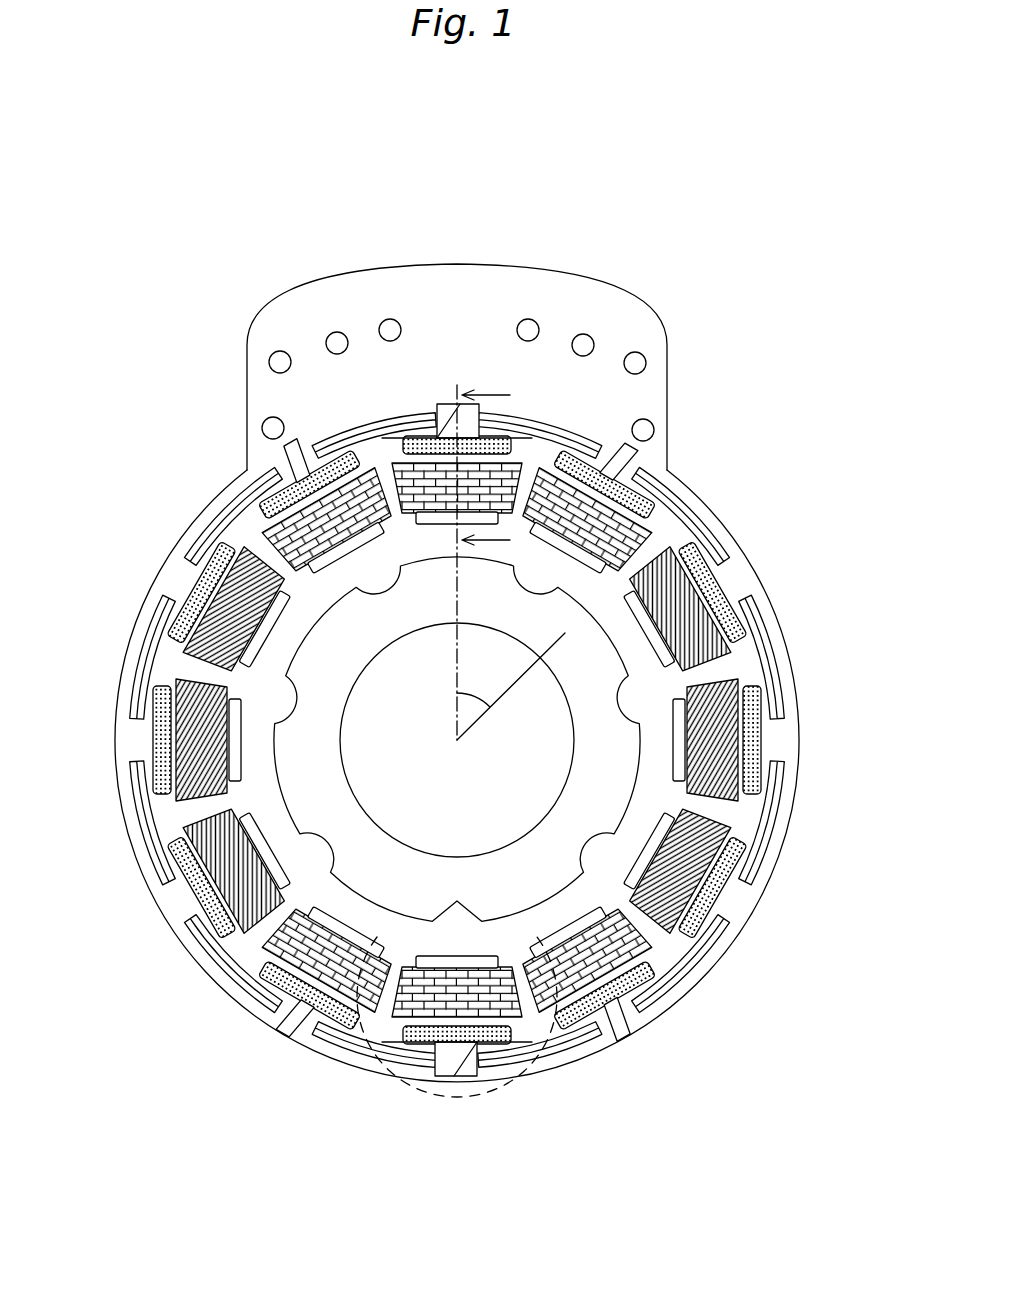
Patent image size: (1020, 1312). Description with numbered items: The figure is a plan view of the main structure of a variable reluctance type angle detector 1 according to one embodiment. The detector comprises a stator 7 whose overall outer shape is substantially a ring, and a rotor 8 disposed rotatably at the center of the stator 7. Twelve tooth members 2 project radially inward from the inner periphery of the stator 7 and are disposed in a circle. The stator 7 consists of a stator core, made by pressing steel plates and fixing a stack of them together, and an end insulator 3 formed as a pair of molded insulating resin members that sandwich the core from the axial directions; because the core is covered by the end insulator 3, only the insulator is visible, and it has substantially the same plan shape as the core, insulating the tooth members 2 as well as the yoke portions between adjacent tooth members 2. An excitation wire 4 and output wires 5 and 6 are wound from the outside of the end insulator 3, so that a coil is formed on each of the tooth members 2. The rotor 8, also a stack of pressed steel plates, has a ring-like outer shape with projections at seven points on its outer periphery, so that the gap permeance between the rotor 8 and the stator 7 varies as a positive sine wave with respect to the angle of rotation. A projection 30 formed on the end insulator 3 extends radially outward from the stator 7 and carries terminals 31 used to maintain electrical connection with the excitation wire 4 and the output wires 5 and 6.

The variable reluctance type angle detector 1 is at (198, 1112).
The tooth members 2 is at (535, 442).
The end insulator 3 is at (834, 747).
The excitation wire 4 is at (290, 455).
The output wire 5 is at (240, 555).
The output wire 6 is at (433, 458).
The stator 7 is at (721, 1000).
The rotor 8 is at (272, 697).
The projection 30 is at (667, 332).
The terminals 31 is at (390, 319).